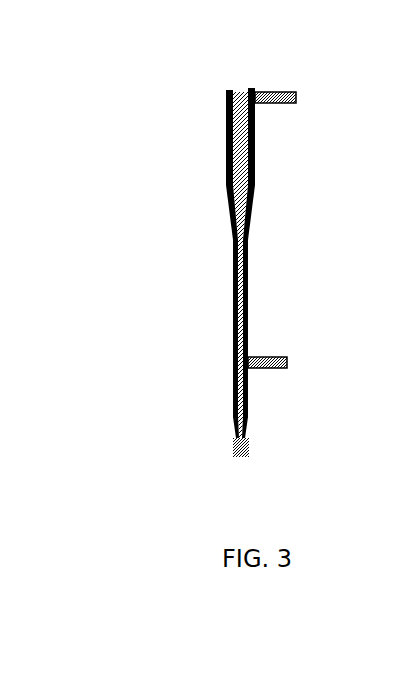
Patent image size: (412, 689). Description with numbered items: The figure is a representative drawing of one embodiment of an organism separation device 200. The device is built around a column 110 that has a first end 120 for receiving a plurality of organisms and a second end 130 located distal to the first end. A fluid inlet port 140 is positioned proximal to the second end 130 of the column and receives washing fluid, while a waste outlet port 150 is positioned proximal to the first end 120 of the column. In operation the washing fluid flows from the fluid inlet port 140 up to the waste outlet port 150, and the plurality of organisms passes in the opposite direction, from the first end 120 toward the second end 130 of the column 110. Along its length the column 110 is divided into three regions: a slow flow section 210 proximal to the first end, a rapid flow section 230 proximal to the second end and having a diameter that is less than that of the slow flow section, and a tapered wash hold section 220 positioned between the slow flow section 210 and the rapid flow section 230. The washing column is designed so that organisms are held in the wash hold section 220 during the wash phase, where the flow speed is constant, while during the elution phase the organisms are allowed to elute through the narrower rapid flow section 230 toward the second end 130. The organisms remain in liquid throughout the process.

The organism separation device 200 is at (140, 88).
The column 110 is at (250, 273).
The first end 120 is at (240, 86).
The second end 130 is at (244, 452).
The fluid inlet port 140 is at (300, 362).
The waste outlet port 150 is at (302, 99).
The slow flow section 210 is at (283, 112).
The tapered wash hold section 220 is at (276, 188).
The rapid flow section 230 is at (264, 240).